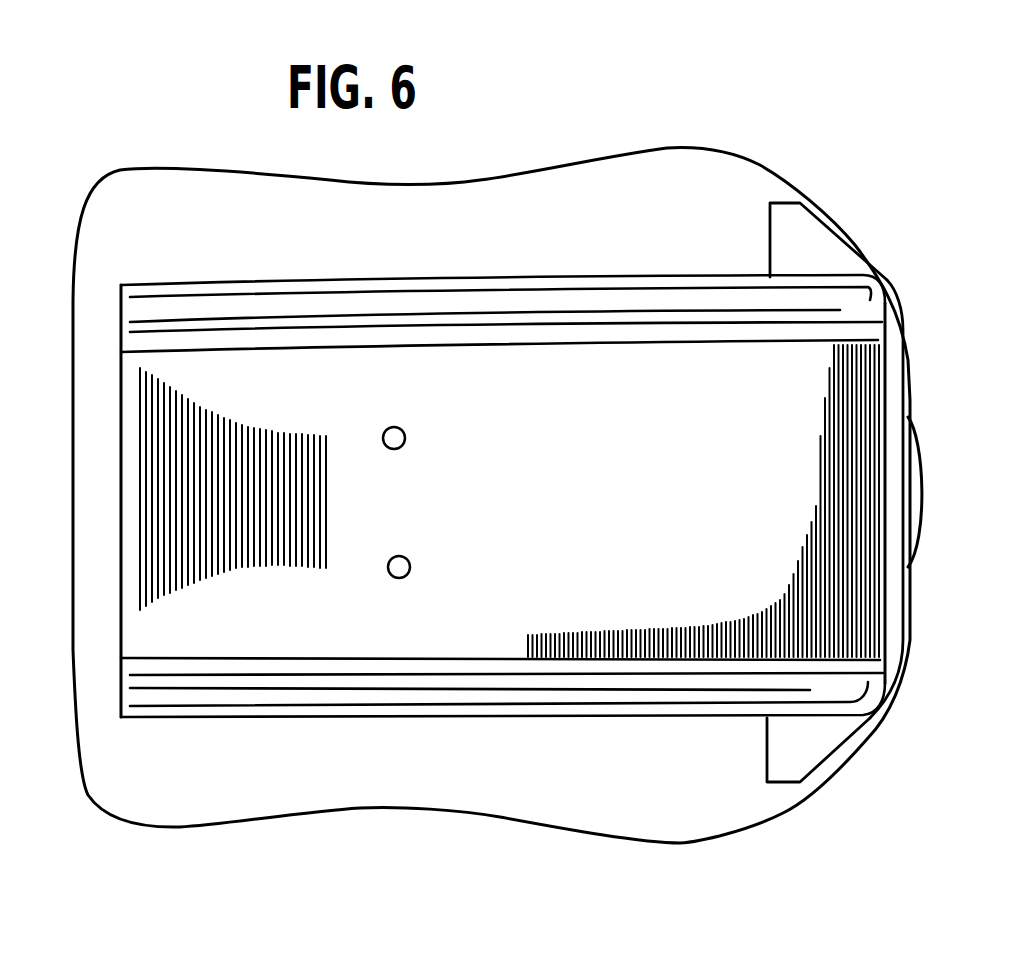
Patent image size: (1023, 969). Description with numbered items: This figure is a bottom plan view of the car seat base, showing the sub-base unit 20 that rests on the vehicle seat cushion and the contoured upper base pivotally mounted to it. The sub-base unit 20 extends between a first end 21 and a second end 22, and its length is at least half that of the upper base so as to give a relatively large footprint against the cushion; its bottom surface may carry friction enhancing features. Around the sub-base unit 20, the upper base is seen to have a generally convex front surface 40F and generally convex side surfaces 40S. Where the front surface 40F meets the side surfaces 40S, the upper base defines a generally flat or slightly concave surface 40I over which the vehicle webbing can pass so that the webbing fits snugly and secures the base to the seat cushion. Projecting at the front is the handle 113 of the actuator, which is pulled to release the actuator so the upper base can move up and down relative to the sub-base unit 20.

The sub-base unit 20 is at (570, 363).
The first end 21 is at (887, 352).
The second end 22 is at (123, 585).
The side surfaces 40S is at (672, 148).
The generally flat or slightly concave surface 40I is at (832, 212).
The front surface 40F is at (910, 585).
The handle 113 is at (922, 472).